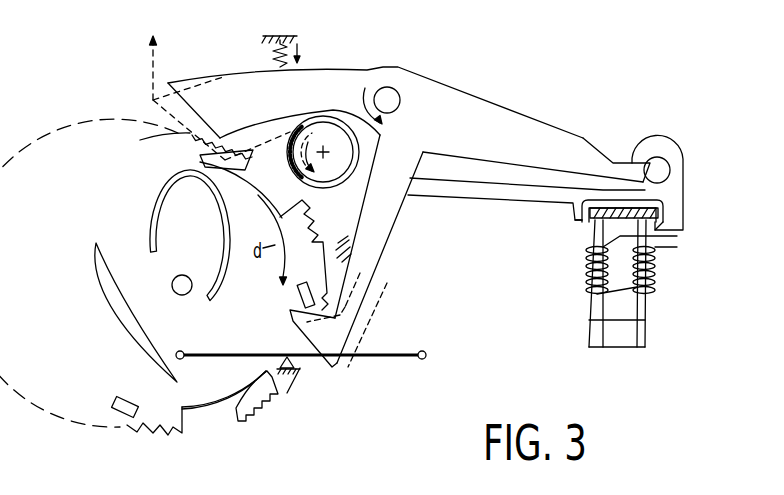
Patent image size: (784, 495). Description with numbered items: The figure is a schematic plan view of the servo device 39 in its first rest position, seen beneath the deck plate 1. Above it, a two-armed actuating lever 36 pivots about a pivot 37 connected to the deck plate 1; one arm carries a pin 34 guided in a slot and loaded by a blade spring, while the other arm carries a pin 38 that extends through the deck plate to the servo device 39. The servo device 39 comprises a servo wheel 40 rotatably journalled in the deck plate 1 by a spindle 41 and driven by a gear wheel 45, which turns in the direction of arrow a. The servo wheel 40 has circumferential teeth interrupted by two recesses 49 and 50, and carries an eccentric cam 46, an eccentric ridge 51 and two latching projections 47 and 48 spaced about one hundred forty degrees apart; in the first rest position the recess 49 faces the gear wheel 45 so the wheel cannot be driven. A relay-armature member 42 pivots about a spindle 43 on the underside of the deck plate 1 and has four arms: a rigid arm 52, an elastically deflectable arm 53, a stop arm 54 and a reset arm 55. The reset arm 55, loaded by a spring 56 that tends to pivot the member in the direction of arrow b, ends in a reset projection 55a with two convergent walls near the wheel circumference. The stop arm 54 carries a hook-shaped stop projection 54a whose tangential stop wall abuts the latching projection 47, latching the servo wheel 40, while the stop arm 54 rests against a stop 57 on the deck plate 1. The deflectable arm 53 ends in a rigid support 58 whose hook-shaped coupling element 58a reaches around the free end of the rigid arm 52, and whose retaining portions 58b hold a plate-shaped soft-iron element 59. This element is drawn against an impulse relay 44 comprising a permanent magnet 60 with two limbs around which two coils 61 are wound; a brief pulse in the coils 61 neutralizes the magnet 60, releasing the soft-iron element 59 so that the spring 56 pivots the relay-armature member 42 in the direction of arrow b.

The deck plate 1 is at (280, 34).
The pin 34 is at (422, 351).
The actuating lever 36 is at (397, 358).
The pivot 37 is at (300, 366).
The pin 38 is at (178, 351).
The servo device 39 is at (275, 420).
The servo wheel 40 is at (156, 425).
The spindle 41 is at (182, 275).
The relay-armature member 42 is at (390, 263).
The spindle 43 is at (398, 96).
The impulse relay 44 is at (577, 340).
The gear wheel 45 is at (337, 127).
The cam 46 is at (147, 185).
The latching projection 47 is at (308, 283).
The latching projection 48 is at (125, 396).
The recess 49 is at (262, 183).
The recess 50 is at (218, 410).
The ridge 51 is at (117, 314).
The rigid arm 52 is at (572, 150).
The elastically deflectable arm 53 is at (478, 193).
The stop arm 54 is at (385, 218).
The stop projection 54a is at (288, 320).
The reset arm 55 is at (283, 90).
The reset projection 55a is at (222, 125).
The spring 56 is at (272, 55).
The stop 57 is at (347, 240).
The support 58 is at (657, 198).
The coupling element 58a is at (673, 148).
The retaining portions 58b is at (583, 222).
The soft-iron element 59 is at (618, 207).
The permanent magnet 60 is at (617, 348).
The coils 61 is at (586, 274).